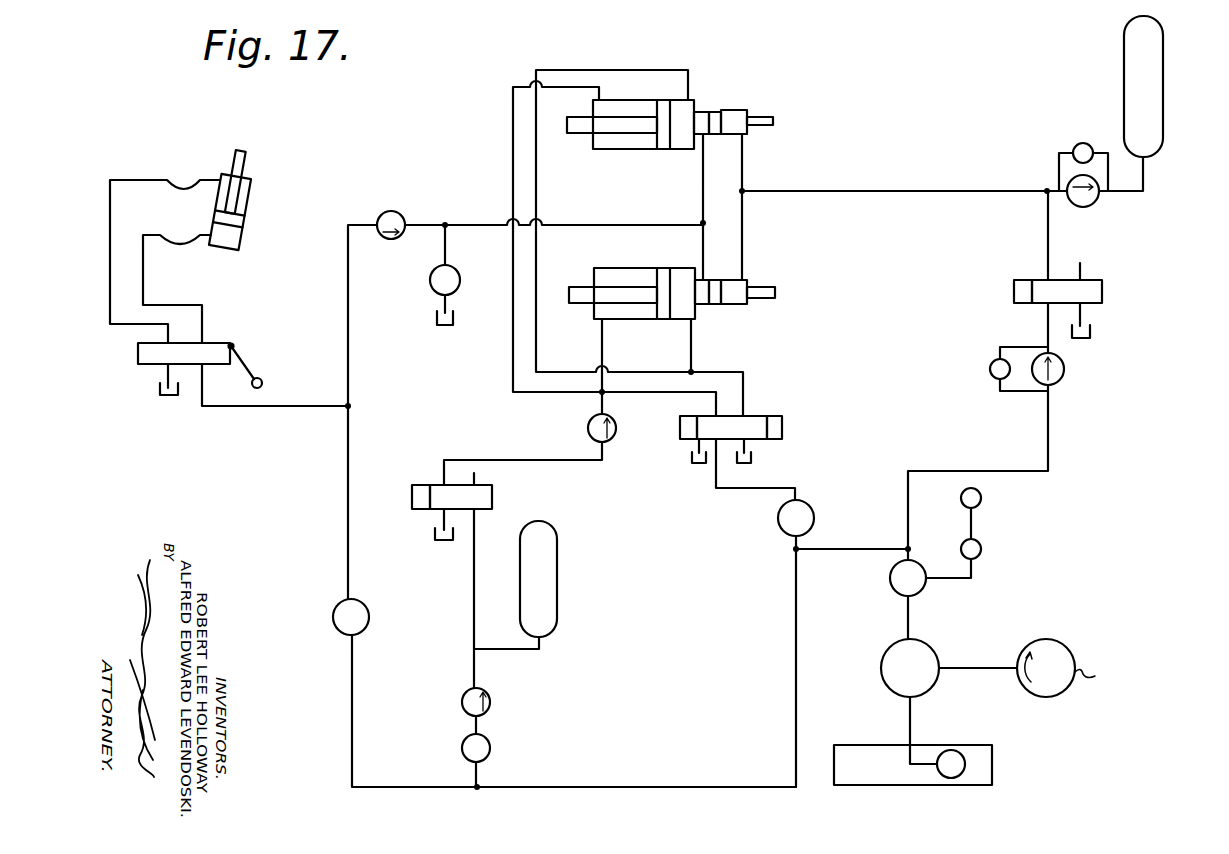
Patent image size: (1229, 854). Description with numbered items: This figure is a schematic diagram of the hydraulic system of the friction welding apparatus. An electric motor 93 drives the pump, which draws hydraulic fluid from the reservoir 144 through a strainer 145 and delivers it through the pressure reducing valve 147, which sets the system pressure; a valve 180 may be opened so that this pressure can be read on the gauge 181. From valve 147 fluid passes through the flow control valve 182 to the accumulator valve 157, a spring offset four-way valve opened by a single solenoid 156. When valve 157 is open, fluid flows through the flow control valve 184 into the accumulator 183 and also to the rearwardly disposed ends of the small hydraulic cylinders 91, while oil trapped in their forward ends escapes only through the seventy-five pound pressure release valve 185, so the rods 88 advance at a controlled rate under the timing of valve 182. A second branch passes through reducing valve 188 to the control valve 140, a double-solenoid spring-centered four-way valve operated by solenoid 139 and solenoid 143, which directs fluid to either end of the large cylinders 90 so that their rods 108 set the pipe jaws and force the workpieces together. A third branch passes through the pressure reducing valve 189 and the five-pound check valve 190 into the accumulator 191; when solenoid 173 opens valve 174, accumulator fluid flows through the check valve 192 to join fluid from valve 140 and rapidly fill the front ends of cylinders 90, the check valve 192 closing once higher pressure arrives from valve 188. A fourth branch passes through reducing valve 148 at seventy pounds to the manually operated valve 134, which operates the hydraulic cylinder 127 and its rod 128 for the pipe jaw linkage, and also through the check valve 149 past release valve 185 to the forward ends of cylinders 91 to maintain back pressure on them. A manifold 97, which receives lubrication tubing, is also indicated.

The hydraulic cylinder 127 is at (253, 193).
The rod 128 is at (249, 161).
The manually operated valve 134 is at (150, 366).
The check valve 149 is at (393, 212).
The pressure release valve 185 is at (430, 282).
The large hydraulic cylinders 90 is at (618, 150).
The rods 108 is at (585, 135).
The small hydraulic cylinders 91 is at (741, 109).
The rods 88 is at (773, 126).
The accumulator 183 is at (1163, 125).
The flow control valve 184 is at (1083, 143).
The solenoid 156 is at (1013, 290).
The accumulator valve 157 is at (1102, 292).
The flow control valve 182 is at (990, 372).
The check valve 192 is at (587, 428).
The control valve 140 is at (755, 416).
The solenoid 139 is at (680, 430).
The solenoid 143 is at (782, 432).
The solenoid 173 is at (412, 491).
The valve 174 is at (492, 497).
The accumulator 191 is at (557, 548).
The reducing valve 188 is at (778, 517).
The gauge 181 is at (982, 500).
The valve 180 is at (982, 552).
The pressure reducing valve 147 is at (890, 585).
The manifold 97 is at (937, 646).
The electric motor 93 is at (1068, 652).
The reducing valve 148 is at (368, 630).
The check valve 190 is at (490, 702).
The pressure reducing valve 189 is at (490, 748).
The strainer 145 is at (950, 750).
The reservoir 144 is at (992, 768).